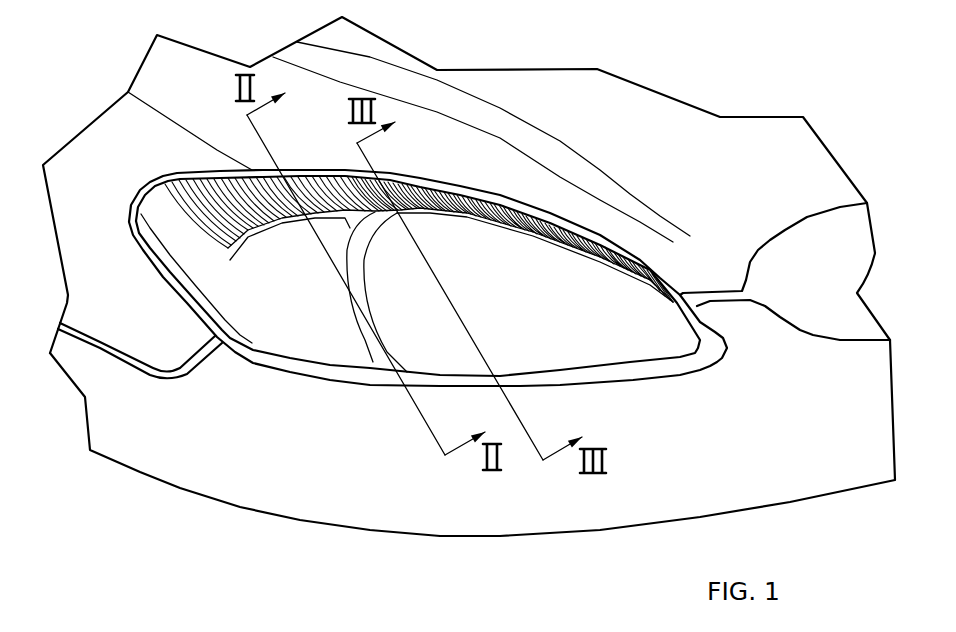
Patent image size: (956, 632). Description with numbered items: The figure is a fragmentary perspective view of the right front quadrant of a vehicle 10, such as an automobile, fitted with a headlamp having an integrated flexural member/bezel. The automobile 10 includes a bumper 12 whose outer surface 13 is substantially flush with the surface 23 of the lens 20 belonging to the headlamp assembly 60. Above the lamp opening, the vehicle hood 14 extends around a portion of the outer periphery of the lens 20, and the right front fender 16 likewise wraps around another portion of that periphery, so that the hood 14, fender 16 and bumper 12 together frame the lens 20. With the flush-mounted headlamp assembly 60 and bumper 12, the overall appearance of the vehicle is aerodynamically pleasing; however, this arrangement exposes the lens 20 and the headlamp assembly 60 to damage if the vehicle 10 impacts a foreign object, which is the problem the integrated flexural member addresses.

The vehicle 10 is at (588, 128).
The bumper 12 is at (758, 478).
The outer surface 13 is at (721, 438).
The vehicle hood 14 is at (687, 127).
The right front fender 16 is at (77, 148).
The lens 20 is at (597, 287).
The surface 23 is at (541, 320).
The headlamp assembly 60 is at (453, 265).